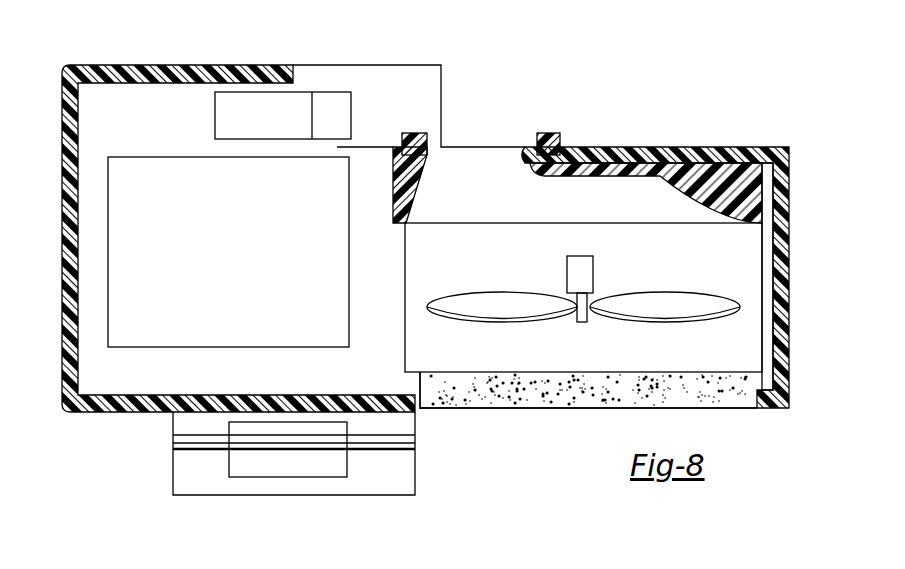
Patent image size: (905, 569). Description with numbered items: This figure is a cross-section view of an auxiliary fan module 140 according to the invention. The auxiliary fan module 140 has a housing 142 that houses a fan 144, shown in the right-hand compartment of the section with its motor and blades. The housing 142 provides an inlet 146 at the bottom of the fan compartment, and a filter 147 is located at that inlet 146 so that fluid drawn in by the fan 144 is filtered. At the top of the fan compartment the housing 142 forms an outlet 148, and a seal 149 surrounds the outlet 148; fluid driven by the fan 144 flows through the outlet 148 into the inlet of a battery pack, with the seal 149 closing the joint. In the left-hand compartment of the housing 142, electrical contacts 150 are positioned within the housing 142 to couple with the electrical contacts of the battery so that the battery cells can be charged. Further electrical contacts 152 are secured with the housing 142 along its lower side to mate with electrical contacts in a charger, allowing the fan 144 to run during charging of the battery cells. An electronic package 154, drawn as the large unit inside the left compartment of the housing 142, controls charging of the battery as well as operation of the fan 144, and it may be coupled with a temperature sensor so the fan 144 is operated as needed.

The auxiliary fan module 140 is at (735, 138).
The housing 142 is at (781, 345).
The fan 144 is at (713, 305).
The inlet 146 is at (747, 410).
The filter 147 is at (549, 409).
The outlet 148 is at (522, 150).
The seal 149 is at (549, 132).
The electrical contacts 150 is at (302, 102).
The electrical contacts 152 is at (257, 465).
The electronic package 154 is at (128, 268).